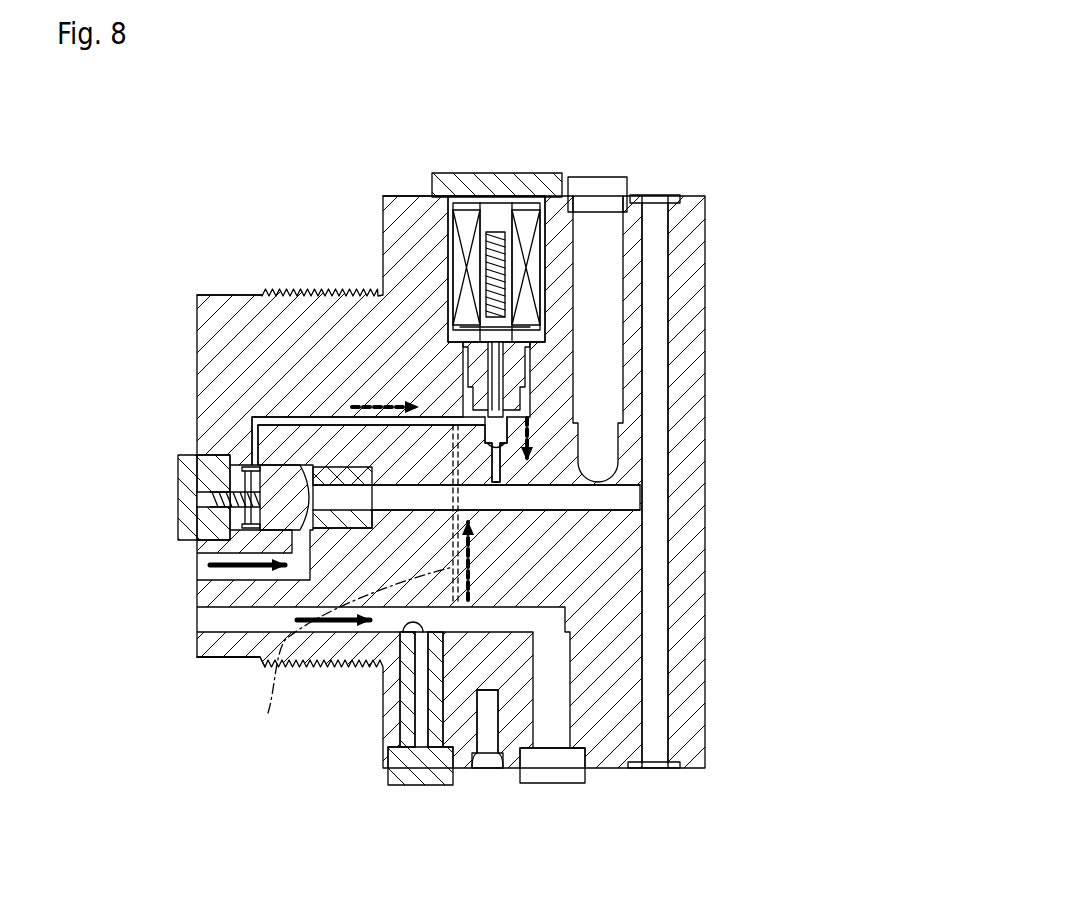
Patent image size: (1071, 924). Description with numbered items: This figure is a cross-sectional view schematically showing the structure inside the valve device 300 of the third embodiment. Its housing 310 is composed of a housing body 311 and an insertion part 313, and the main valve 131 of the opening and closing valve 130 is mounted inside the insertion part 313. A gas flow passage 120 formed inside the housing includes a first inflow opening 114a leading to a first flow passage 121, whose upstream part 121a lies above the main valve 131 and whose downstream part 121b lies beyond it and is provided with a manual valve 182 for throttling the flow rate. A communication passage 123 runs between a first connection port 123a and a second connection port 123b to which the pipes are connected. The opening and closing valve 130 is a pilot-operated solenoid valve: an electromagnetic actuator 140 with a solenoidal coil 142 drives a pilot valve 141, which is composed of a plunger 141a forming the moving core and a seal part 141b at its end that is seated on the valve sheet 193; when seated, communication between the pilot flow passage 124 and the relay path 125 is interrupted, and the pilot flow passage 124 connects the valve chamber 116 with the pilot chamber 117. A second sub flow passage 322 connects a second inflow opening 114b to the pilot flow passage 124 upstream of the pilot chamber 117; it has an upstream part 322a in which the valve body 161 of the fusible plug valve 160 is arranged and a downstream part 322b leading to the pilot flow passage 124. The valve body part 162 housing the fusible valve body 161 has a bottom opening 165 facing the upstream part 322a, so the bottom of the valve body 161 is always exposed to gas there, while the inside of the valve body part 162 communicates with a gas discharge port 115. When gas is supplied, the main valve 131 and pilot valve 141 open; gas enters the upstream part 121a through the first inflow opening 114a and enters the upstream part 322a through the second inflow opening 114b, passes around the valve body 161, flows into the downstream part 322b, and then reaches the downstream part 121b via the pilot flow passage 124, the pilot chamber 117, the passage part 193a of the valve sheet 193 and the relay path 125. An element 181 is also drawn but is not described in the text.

The valve device 300 is at (157, 121).
The housing 310 is at (438, 140).
The housing body 311 is at (404, 225).
The insertion part 313 is at (360, 290).
The second sub flow passage 322 is at (303, 740).
The upstream part 322a is at (242, 640).
The downstream part 322b is at (346, 657).
The solenoidal coil 142 is at (478, 196).
The manual valve 182 is at (598, 177).
The communication passage 123 is at (709, 481).
The first connection port 123a is at (670, 196).
The second connection port 123b is at (665, 777).
The opening and closing valve 130 is at (112, 322).
The electromagnetic actuator 140 is at (658, 300).
The pilot valve 141 is at (661, 307).
The plunger 141a is at (497, 323).
The seal part 141b is at (497, 405).
The valve sheet 193 is at (636, 412).
The passage part 193a is at (500, 467).
The pilot chamber 117 is at (468, 417).
The pilot flow passage 124 is at (277, 480).
The main valve 131 is at (287, 423).
The valve chamber 116 is at (220, 480).
The first flow passage 121 is at (221, 513).
The upstream part 121a is at (407, 497).
The downstream part 121b is at (220, 507).
The relay path 125 is at (497, 472).
The first inflow opening 114a is at (197, 570).
The second inflow opening 114b is at (197, 618).
The gas flow passage 120 is at (572, 524).
The fusible plug valve 160 is at (390, 734).
The valve body 161 is at (423, 727).
The valve body part 162 is at (403, 707).
The opening 165 is at (397, 642).
The gas discharge port 115 is at (485, 770).
The connector 181 is at (553, 770).